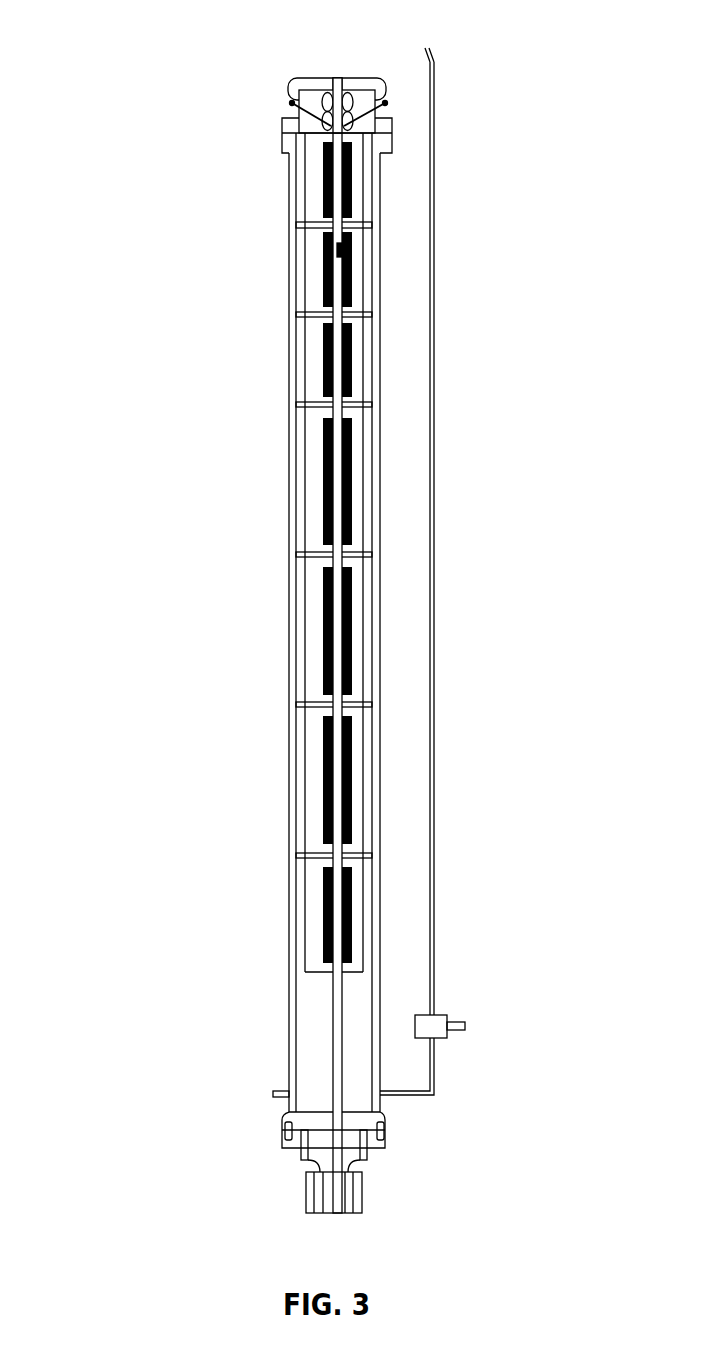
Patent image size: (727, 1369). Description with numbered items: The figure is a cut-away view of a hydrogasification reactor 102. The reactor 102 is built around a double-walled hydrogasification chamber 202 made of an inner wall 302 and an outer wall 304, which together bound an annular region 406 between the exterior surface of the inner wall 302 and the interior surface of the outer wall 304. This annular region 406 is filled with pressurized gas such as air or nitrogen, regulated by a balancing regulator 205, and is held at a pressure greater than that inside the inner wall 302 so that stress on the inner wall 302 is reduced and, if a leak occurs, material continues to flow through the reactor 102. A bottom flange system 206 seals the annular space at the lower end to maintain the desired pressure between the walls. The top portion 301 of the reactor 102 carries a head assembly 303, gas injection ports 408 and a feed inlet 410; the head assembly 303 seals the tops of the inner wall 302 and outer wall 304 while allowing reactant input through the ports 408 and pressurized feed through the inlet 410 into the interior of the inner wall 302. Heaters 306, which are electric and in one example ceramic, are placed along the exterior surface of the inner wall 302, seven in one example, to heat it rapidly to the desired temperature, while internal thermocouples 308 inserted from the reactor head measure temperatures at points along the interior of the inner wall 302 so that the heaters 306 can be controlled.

The hydrogasification reactor 102 is at (197, 37).
The double-walled hydrogasification chamber 202 is at (290, 577).
The balancing regulator 205 is at (437, 545).
The bottom flange system 206 is at (283, 1132).
The top portion 301 is at (280, 78).
The inner wall 302 is at (348, 312).
The head assembly 303 is at (281, 149).
The outer wall 304 is at (293, 998).
The heaters 306 is at (350, 160).
The internal thermocouples 308 is at (347, 247).
The annular region 406 is at (370, 200).
The gas injection ports 408 is at (390, 96).
The feed inlet 410 is at (339, 68).